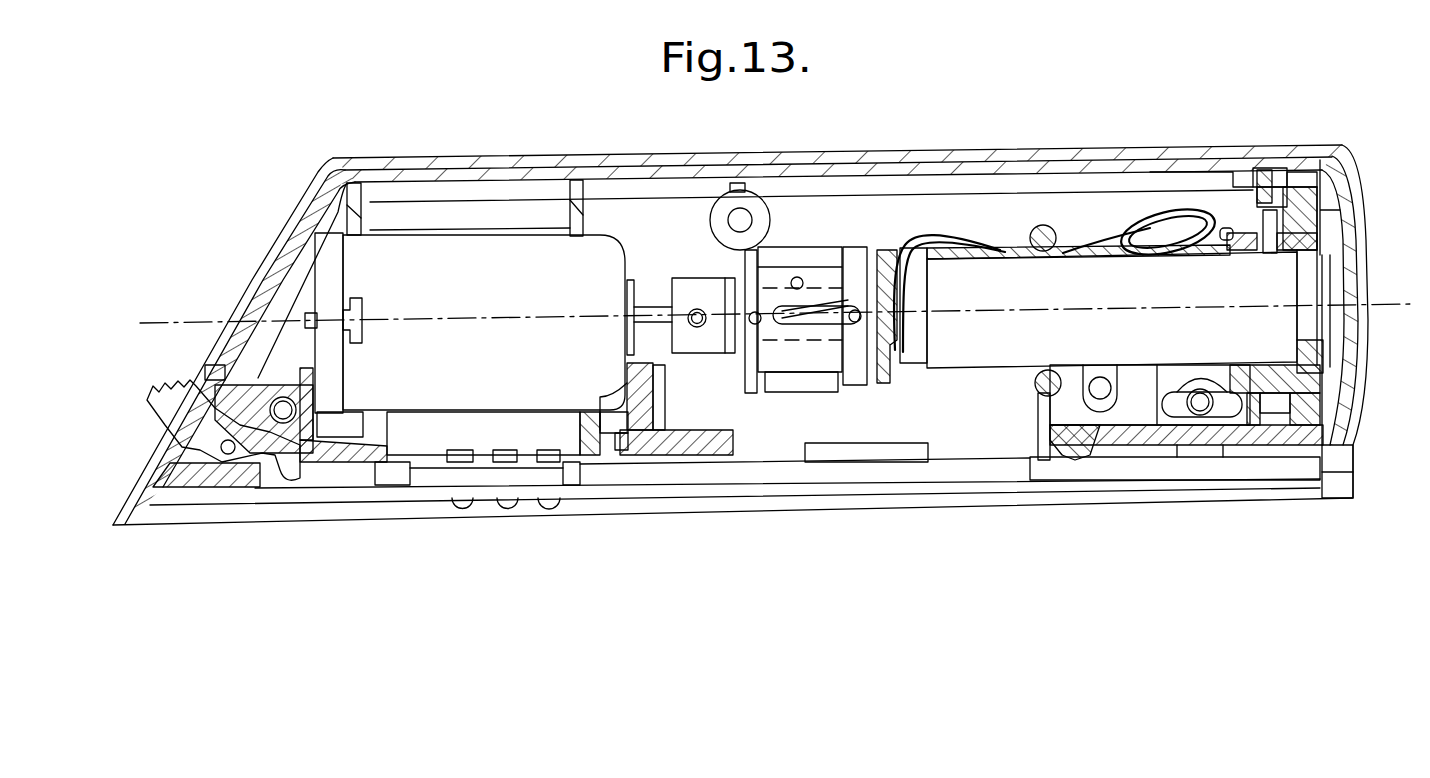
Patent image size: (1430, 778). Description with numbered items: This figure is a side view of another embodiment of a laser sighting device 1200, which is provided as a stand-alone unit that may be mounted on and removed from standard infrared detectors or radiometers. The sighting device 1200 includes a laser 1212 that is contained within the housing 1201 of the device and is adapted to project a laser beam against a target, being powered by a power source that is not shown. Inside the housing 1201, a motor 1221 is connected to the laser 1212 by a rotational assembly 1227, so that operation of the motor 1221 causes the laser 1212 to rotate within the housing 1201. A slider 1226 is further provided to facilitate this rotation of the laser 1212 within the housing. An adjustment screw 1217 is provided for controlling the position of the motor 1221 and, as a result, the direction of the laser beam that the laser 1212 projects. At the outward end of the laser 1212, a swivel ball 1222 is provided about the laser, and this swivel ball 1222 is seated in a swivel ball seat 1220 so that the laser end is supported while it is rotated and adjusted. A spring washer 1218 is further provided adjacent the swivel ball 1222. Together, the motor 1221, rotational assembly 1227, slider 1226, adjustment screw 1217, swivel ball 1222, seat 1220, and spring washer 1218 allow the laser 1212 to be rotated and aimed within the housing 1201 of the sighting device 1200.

The laser sighting device 1200 is at (988, 133).
The housing 1201 is at (860, 152).
The laser 1212 is at (1140, 237).
The adjustment screw 1217 is at (700, 380).
The spring washer 1218 is at (1340, 241).
The swivel ball seat 1220 is at (1320, 190).
The motor 1221 is at (400, 380).
The swivel ball 1222 is at (1250, 232).
The slider 1226 is at (803, 247).
The rotational assembly 1227 is at (697, 278).